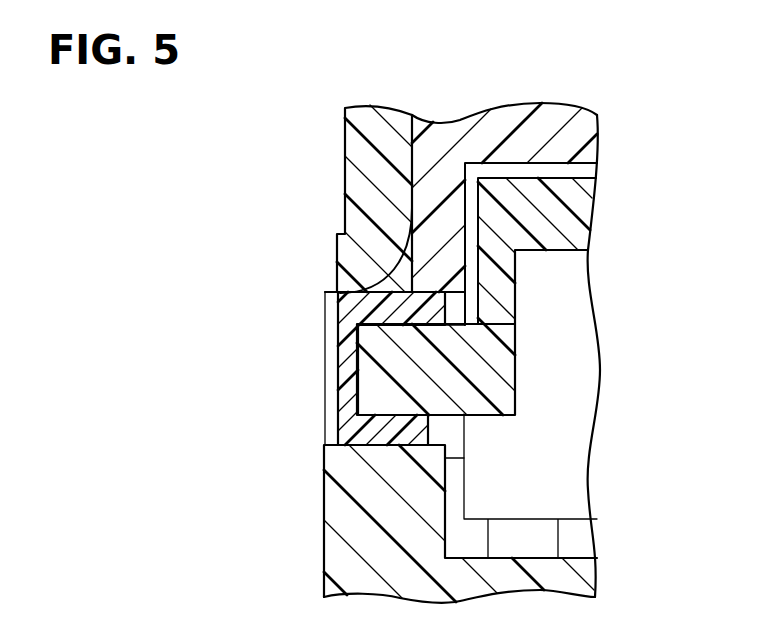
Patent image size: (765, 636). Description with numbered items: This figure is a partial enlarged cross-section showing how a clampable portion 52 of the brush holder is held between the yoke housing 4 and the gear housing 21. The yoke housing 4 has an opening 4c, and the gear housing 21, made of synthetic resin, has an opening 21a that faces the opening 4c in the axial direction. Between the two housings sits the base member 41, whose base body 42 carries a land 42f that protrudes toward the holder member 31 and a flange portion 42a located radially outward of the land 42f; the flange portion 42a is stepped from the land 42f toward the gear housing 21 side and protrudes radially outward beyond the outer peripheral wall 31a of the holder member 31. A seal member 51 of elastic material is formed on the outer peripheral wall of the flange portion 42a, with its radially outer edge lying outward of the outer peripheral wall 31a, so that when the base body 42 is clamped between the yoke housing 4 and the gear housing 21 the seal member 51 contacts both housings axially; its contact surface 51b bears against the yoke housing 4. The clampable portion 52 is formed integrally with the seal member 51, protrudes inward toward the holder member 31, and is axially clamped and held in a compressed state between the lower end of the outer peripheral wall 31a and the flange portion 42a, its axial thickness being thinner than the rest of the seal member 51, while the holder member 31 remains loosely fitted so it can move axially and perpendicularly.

The yoke housing 4 is at (353, 141).
The opening of yoke housing 4c is at (412, 198).
The holder member 31 is at (557, 112).
The outer peripheral wall of holder member 31a is at (418, 253).
The base body 42 is at (531, 387).
The base member 41 is at (580, 216).
The flange portion 42a is at (370, 366).
The land 42f is at (574, 190).
The seal member 51 is at (345, 338).
The contact surface of seal member 51b is at (357, 287).
The clampable portion 52 is at (446, 307).
The gear housing 21 is at (332, 501).
The opening of gear housing 21a is at (447, 472).